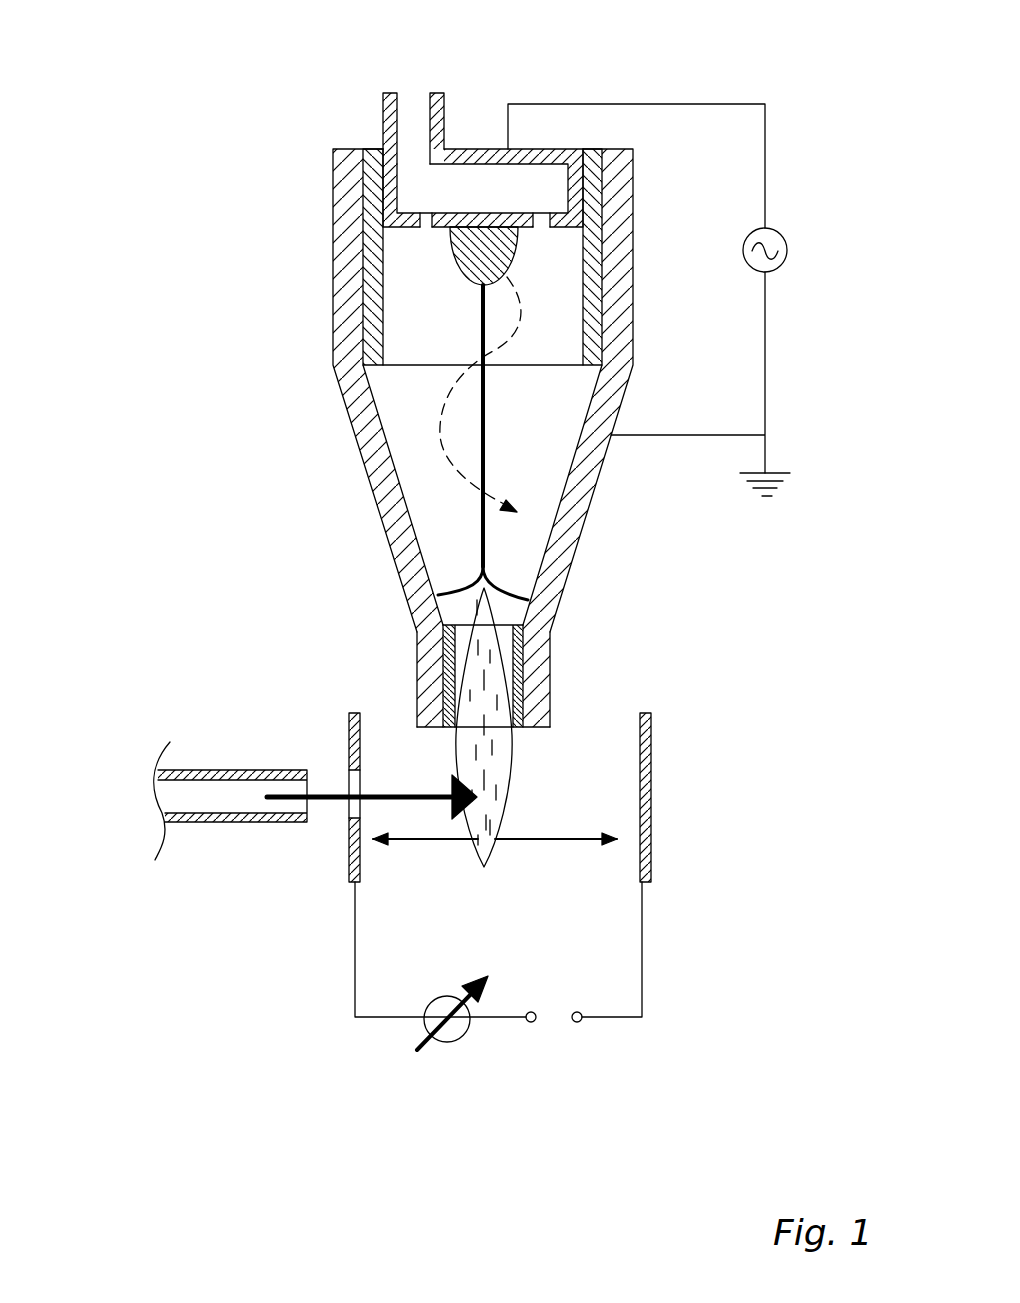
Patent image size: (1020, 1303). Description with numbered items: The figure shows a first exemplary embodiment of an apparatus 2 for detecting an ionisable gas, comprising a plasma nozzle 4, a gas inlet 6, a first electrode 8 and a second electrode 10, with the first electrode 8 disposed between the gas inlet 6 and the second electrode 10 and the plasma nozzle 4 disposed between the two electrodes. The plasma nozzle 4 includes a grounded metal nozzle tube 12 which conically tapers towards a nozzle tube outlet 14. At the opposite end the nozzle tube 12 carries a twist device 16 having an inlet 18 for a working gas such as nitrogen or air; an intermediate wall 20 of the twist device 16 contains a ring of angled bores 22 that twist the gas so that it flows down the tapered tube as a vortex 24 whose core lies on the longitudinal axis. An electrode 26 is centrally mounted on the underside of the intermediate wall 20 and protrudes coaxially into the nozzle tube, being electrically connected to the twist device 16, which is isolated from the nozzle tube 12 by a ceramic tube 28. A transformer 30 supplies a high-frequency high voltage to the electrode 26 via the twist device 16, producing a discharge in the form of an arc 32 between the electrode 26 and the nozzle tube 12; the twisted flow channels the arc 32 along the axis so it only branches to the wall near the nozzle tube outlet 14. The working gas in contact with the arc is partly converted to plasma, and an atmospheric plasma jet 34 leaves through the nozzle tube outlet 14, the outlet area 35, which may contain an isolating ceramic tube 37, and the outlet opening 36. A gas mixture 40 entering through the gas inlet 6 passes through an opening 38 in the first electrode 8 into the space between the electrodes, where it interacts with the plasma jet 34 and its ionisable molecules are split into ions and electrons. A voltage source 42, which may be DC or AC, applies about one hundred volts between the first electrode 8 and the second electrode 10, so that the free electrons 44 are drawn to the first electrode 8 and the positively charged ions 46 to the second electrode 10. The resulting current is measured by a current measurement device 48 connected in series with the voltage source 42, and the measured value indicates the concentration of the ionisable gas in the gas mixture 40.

The apparatus 2 is at (155, 108).
The plasma nozzle 4 is at (345, 493).
The gas inlet 6 is at (217, 795).
The first electrode 8 is at (352, 715).
The second electrode 10 is at (648, 718).
The nozzle tube 12 is at (343, 342).
The nozzle tube outlet 14 is at (525, 647).
The twist device 16 is at (475, 135).
The inlet 18 is at (384, 108).
The intermediate wall 20 is at (458, 208).
The bores 22 is at (427, 227).
The vortex 24 is at (440, 400).
The electrode 26 is at (467, 257).
The ceramic tube 28 is at (590, 207).
The transformer 30 is at (788, 232).
The arc 32 is at (483, 425).
The plasma jet 34 is at (488, 752).
The outlet area 35 is at (430, 672).
The outlet opening 36 is at (457, 733).
The isolating ceramic tube 37 is at (520, 678).
The opening 38 is at (348, 808).
The gas mixture 40 is at (322, 793).
The voltage source 42 is at (555, 1033).
The free electrons 44 is at (412, 850).
The positively charged ions 46 is at (565, 848).
The current measurement device 48 is at (443, 1052).